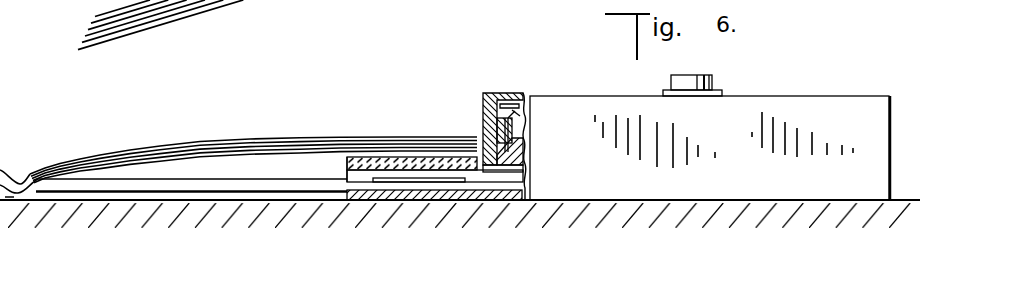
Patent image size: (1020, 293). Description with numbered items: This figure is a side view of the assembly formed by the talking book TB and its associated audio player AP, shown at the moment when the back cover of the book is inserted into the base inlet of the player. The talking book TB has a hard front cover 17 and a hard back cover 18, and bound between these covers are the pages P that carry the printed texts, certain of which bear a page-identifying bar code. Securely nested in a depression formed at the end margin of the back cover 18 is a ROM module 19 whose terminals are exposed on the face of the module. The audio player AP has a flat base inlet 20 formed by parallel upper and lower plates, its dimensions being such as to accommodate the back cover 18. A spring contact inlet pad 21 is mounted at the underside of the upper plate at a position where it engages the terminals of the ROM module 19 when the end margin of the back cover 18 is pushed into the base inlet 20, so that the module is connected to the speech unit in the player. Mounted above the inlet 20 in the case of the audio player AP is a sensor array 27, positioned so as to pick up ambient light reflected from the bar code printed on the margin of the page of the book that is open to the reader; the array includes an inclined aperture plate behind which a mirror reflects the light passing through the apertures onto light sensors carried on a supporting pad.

The hard front cover 17 is at (292, 0).
The hard back cover 18 is at (300, 192).
The ROM module 19 is at (465, 183).
The flat base inlet 20 is at (418, 201).
The spring contact inlet pad 21 is at (407, 165).
The sensor array 27 is at (519, 90).
The talking book TB is at (164, 104).
The pages P is at (268, 140).
The audio player AP is at (808, 91).